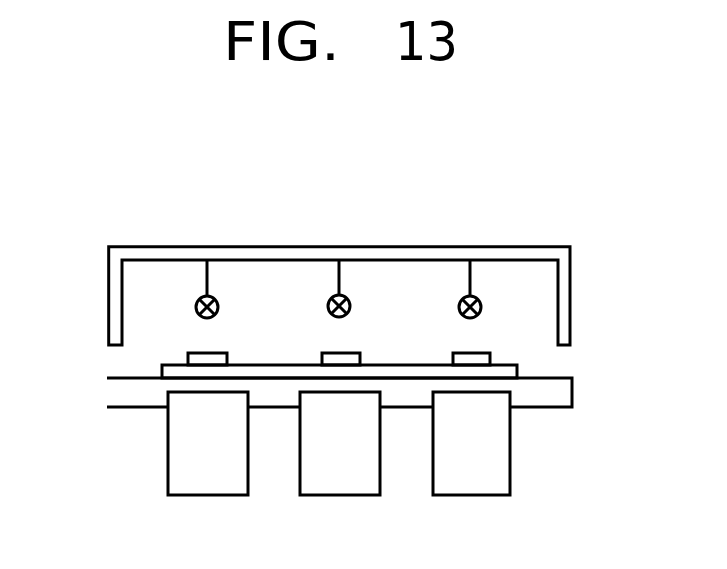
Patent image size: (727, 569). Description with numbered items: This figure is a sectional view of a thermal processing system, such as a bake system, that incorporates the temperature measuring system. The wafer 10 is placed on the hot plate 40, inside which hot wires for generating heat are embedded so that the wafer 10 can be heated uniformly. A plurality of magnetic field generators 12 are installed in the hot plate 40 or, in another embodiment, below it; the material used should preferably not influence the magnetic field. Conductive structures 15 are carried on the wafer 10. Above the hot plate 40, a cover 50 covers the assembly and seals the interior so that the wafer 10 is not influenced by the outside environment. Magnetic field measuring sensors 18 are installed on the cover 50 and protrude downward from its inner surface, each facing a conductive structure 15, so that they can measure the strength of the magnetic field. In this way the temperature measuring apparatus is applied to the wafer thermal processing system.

The cover 50 is at (567, 312).
The magnetic field measuring sensor 18 is at (352, 300).
The conductive structure 15 is at (187, 357).
The wafer 10 is at (517, 370).
The hot plate 40 is at (572, 392).
The magnetic field generators 12 is at (510, 443).